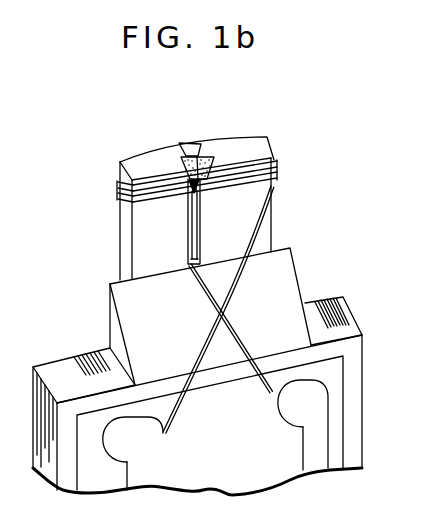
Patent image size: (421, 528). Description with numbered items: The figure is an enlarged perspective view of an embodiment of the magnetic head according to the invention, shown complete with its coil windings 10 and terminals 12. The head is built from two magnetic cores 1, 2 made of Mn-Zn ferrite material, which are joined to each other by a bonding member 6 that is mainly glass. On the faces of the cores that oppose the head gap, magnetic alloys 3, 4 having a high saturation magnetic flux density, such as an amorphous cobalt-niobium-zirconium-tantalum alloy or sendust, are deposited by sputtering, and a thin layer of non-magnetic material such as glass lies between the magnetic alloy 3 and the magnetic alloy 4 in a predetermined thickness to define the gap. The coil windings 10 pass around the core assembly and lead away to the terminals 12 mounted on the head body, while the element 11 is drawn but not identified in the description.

The magnetic core 1 is at (147, 246).
The magnetic core 2 is at (264, 238).
The magnetic alloy 3 is at (188, 232).
The magnetic alloy 4 is at (203, 226).
The bonding member 6 is at (189, 141).
The coil windings 10 is at (270, 206).
The support block 11 is at (285, 283).
The terminals 12 is at (313, 402).